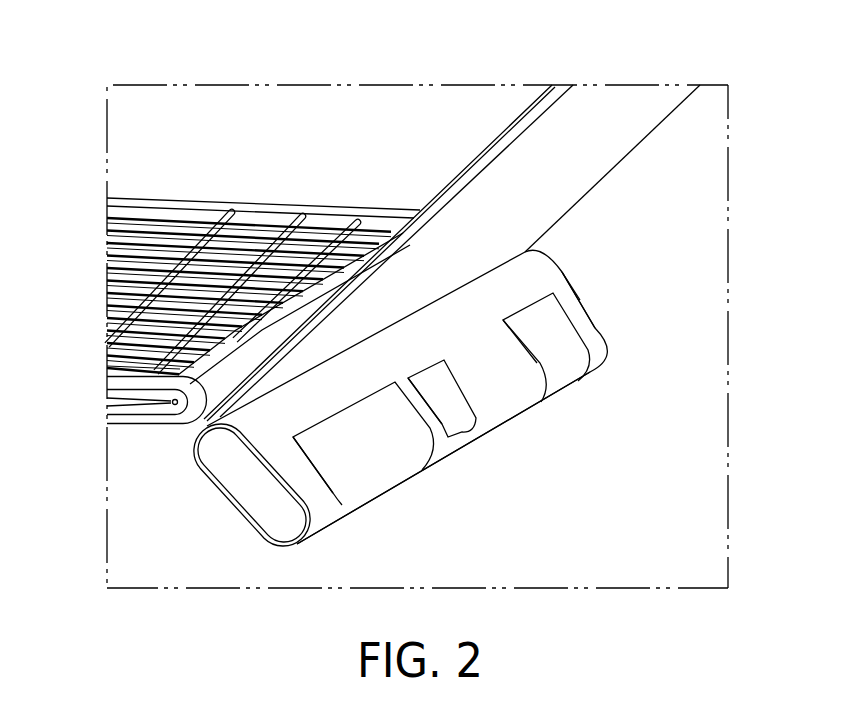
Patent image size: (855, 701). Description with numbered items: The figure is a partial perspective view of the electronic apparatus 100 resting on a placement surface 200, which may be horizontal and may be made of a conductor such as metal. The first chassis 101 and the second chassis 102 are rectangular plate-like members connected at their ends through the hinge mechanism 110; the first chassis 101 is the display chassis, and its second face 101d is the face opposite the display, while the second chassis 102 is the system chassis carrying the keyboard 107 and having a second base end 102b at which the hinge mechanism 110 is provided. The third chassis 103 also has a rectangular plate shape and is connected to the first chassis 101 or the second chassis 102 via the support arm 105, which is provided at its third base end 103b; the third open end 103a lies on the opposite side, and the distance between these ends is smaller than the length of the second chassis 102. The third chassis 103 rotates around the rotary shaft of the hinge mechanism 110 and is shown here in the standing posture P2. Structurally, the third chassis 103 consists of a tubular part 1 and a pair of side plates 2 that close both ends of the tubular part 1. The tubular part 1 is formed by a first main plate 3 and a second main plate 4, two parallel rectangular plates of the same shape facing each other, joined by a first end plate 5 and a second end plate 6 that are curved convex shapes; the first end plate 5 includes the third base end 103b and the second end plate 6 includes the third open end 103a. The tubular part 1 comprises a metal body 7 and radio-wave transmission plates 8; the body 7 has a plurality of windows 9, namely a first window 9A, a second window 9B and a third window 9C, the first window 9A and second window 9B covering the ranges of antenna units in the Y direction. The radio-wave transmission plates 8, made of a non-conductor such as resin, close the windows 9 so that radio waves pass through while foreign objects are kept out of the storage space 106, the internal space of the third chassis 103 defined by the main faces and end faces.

The tubular part 1 is at (614, 347).
The side plates 2 is at (250, 492).
The first main plate 3 is at (473, 340).
The second main plate 4 is at (222, 500).
The first end plate 5 is at (373, 334).
The second end plate 6 is at (512, 405).
The body 7 is at (597, 325).
The radio-wave transmission plate 8 is at (574, 360).
The windows 9 is at (430, 340).
The first window 9A is at (340, 497).
The second window 9B is at (545, 378).
The third window 9C is at (458, 428).
The electronic apparatus 100 is at (458, 114).
The first chassis 101 is at (664, 130).
The second face 101d is at (573, 158).
The second chassis 102 is at (231, 195).
The second base end 102b is at (231, 366).
The third chassis 103 is at (585, 283).
The third open end 103a is at (510, 405).
The third base end 103b is at (403, 314).
The support arm 105 is at (197, 424).
The storage space 106 is at (277, 517).
The keyboard 107 is at (167, 212).
The hinge mechanism 110 is at (107, 404).
The placement surface 200 is at (135, 545).
The standing posture P2 is at (596, 302).